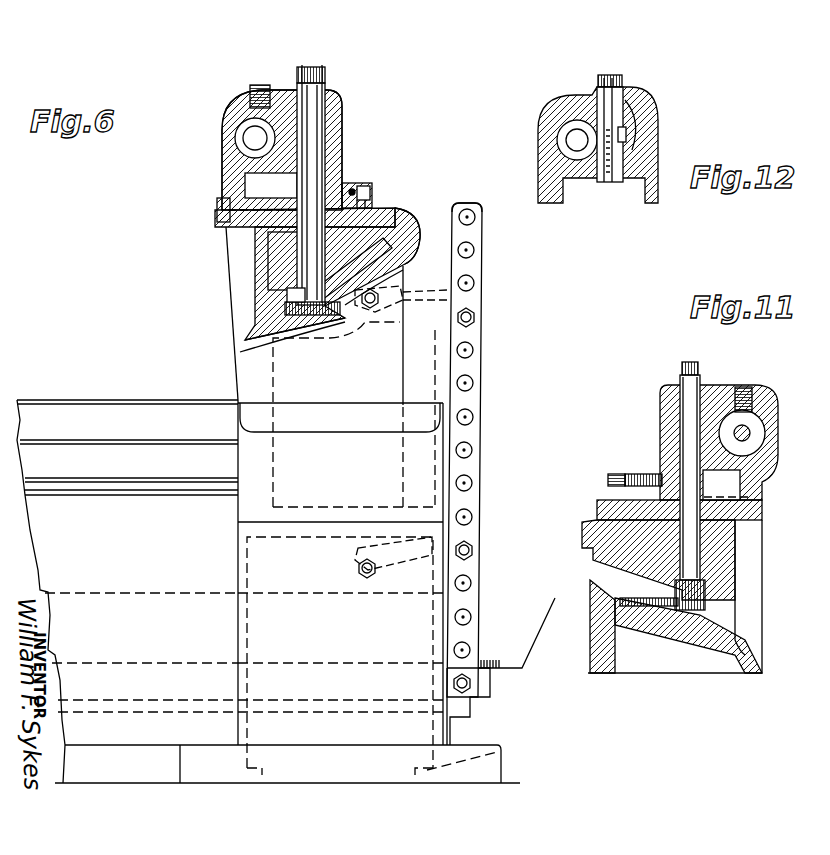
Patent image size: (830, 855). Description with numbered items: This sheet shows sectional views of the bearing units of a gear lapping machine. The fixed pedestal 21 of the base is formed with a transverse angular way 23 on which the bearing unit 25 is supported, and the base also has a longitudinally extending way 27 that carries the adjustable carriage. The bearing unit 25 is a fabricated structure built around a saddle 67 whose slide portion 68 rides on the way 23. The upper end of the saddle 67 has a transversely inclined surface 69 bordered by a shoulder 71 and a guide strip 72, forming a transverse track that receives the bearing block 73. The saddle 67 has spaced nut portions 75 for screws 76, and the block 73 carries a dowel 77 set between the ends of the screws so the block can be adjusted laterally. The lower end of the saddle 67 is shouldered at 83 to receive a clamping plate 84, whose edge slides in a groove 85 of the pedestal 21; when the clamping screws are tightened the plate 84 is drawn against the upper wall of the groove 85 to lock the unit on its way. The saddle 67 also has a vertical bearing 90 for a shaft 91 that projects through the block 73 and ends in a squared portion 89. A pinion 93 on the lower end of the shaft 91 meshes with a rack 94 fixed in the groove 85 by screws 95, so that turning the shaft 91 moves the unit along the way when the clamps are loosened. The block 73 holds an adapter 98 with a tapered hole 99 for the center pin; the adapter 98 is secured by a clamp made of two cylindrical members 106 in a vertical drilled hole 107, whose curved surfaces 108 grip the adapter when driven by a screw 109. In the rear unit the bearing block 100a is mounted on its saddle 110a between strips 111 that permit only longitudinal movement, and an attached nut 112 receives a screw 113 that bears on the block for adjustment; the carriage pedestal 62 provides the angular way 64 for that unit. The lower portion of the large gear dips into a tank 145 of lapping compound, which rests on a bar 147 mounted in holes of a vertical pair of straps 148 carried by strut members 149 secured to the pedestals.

In FIG. 6, the pedestal 21 is at (287, 524).
In FIG. 6, the transverse angular way 23 is at (300, 273).
In FIG. 6, the bearing unit 25 is at (348, 113).
In FIG. 12, the bearing unit 25 is at (685, 124).
In FIG. 6, the longitudinally extending way 27 is at (100, 442).
In FIG. 11, the pedestal 62 is at (590, 583).
In FIG. 11, the angular way 64 is at (592, 547).
In FIG. 6, the saddle 67 is at (400, 208).
In FIG. 6, the slide portion 68 is at (468, 203).
In FIG. 6, the inclined surface 69 is at (252, 233).
In FIG. 6, the shoulder 71 is at (372, 207).
In FIG. 6, the guide strip 72 is at (217, 215).
In FIG. 6, the bearing block 73 is at (222, 170).
In FIG. 6, the nut portion 75 is at (368, 190).
In FIG. 6, the screw 76 is at (370, 185).
In FIG. 6, the dowel 77 is at (352, 184).
In FIG. 6, the shoulder 83 is at (287, 295).
In FIG. 6, the clamping plate 84 is at (285, 308).
In FIG. 6, the groove 85 is at (400, 255).
In FIG. 6, the squared portion 89 is at (313, 67).
In FIG. 6, the vertical bearing 90 is at (320, 263).
In FIG. 6, the shaft 91 is at (325, 72).
In FIG. 6, the pinion 93 is at (240, 338).
In FIG. 6, the rack 94 is at (240, 352).
In FIG. 6, the screw 95 is at (482, 283).
In FIG. 6, the adapter 98 is at (244, 126).
In FIG. 6, the tapered hole 99 is at (248, 110).
In FIG. 11, the bearing block 100a is at (660, 432).
In FIG. 12, the cylindrical member 106 is at (627, 102).
In FIG. 12, the vertical drilled hole 107 is at (635, 98).
In FIG. 12, the curved surface 108 is at (598, 78).
In FIG. 12, the screw 109 is at (612, 75).
In FIG. 11, the saddle 110a is at (583, 518).
In FIG. 11, the strip 111 is at (745, 497).
In FIG. 11, the nut 112 is at (640, 474).
In FIG. 11, the screw 113 is at (608, 480).
In FIG. 6, the tank 145 is at (530, 668).
In FIG. 6, the bar 147 is at (478, 690).
In FIG. 6, the strap 148 is at (482, 395).
In FIG. 6, the strut member 149 is at (432, 308).